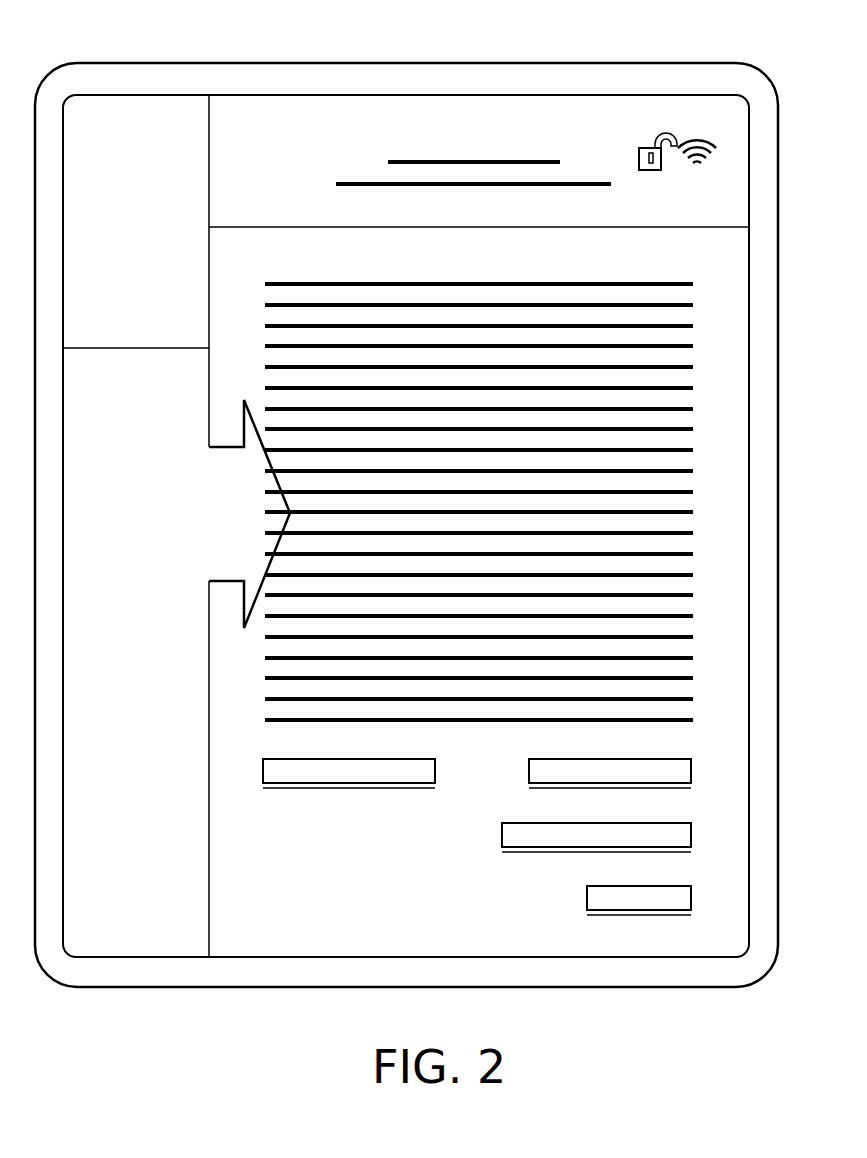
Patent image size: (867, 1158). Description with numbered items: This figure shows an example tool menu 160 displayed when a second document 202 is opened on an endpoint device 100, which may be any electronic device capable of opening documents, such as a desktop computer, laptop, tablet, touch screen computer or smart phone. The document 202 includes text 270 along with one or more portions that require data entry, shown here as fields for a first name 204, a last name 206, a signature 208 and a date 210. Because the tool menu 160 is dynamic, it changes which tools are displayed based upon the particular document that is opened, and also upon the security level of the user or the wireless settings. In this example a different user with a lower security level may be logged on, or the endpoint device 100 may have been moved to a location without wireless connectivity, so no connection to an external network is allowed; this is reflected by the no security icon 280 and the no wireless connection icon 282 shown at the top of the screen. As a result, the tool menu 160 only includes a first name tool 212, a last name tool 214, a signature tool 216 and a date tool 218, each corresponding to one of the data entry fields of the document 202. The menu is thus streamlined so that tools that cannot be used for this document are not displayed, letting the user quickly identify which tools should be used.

The endpoint device 100 is at (410, 63).
The tool menu 160 is at (244, 418).
The second document 202 is at (605, 945).
The first name field 204 is at (435, 770).
The last name field 206 is at (691, 770).
The signature field 208 is at (691, 834).
The date field 210 is at (691, 897).
The first name tool 212 is at (197, 161).
The last name tool 214 is at (190, 206).
The signature tool 216 is at (190, 251).
The date tool 218 is at (128, 297).
The text 270 is at (613, 284).
The no security icon 280 is at (639, 157).
The no wireless connection icon 282 is at (697, 138).